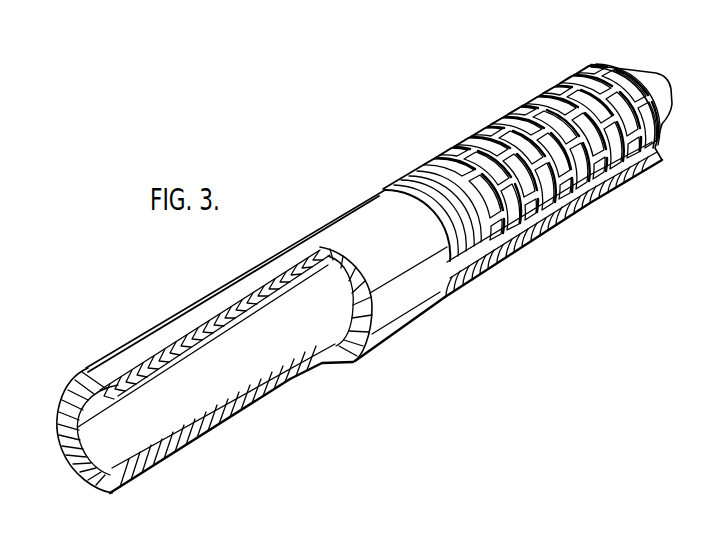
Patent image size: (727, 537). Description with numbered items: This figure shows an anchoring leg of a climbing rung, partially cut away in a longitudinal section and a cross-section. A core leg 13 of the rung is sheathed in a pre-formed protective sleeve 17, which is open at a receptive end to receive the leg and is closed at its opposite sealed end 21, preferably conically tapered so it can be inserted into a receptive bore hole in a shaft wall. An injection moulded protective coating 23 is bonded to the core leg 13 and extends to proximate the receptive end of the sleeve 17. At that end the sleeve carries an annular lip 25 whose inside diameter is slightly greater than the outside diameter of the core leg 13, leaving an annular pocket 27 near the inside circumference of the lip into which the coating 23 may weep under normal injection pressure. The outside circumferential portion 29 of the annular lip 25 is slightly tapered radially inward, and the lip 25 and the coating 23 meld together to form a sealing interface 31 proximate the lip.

The core leg 13 is at (250, 394).
The pre-formed protective sleeve 17 is at (352, 364).
The sealed end 21 is at (633, 72).
The injection moulded protective coating 23 is at (128, 483).
The annular lip 25 is at (203, 437).
The annular pocket 27 is at (216, 331).
The outside circumferential portion 29 is at (198, 440).
The sealing interface 31 is at (184, 337).